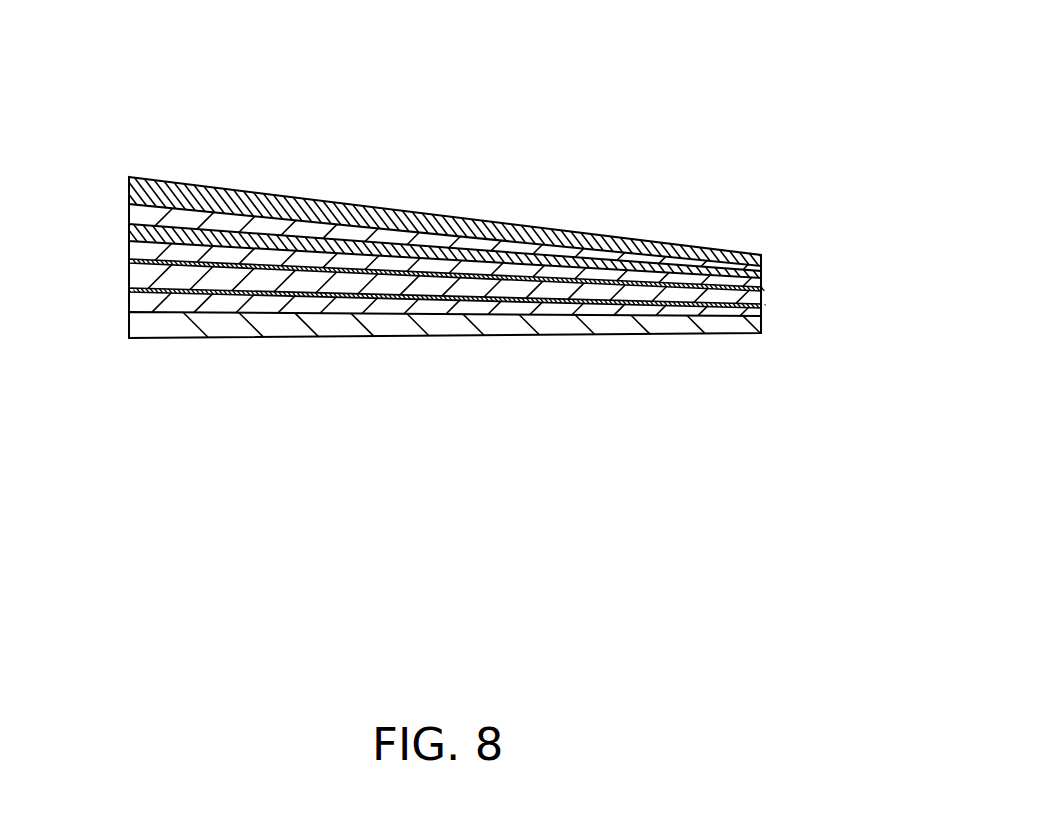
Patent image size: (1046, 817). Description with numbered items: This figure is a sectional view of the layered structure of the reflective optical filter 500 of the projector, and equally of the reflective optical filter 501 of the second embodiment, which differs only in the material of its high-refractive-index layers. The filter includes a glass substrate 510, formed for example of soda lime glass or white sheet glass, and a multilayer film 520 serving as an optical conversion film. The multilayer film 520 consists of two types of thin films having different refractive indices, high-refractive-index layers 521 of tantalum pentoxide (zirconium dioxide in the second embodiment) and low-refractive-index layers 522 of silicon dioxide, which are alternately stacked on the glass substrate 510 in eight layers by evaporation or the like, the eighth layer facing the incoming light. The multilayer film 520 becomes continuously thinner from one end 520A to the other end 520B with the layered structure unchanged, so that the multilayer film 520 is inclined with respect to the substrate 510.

The reflective optical filter 500 is at (456, 190).
The reflective optical filter 501 is at (456, 223).
The substrate 510 is at (143, 328).
The multilayer film 520 is at (456, 223).
The one end of the multilayer film 520A is at (131, 177).
The other end of the multilayer film 520B is at (761, 255).
The high-refractive-index layer 521 is at (762, 273).
The low-refractive-index layer 522 is at (818, 246).